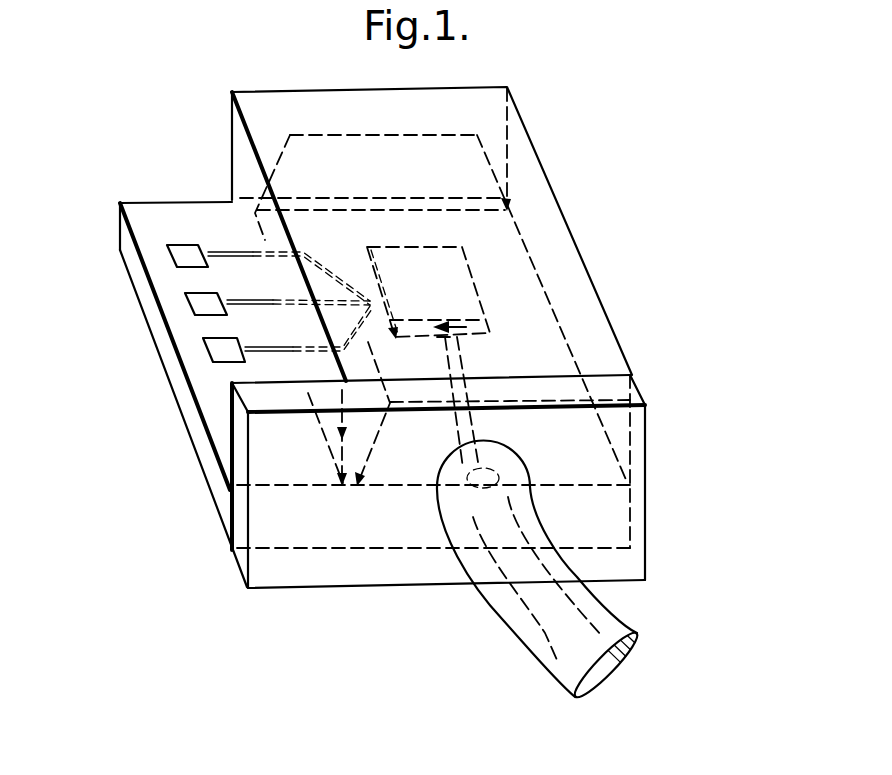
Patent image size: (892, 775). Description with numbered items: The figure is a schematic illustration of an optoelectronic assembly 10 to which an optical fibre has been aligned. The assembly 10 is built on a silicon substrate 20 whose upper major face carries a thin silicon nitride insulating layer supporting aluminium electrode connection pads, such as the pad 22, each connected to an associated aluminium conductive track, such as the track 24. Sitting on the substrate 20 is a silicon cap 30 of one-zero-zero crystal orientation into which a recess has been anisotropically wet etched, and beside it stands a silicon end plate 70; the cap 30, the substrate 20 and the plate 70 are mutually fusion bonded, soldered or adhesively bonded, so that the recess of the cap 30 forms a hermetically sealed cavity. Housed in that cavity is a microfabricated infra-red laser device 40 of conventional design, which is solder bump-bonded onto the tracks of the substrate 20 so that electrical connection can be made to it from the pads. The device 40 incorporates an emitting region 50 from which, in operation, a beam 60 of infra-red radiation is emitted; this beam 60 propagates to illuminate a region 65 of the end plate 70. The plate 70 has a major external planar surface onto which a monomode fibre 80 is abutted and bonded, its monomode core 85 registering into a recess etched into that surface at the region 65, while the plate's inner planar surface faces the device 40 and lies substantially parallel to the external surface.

The optoelectronic assembly 10 is at (660, 164).
The silicon substrate 20 is at (150, 213).
The pad 22 is at (178, 253).
The track 24 is at (228, 252).
The silicon cap 30 is at (328, 105).
The infra-red laser device 40 is at (458, 268).
The emitting region 50 is at (467, 327).
The beam 60 is at (450, 355).
The region 65 is at (497, 472).
The silicon end plate 70 is at (345, 572).
The monomode fibre 80 is at (508, 610).
The monomode core 85 is at (556, 672).